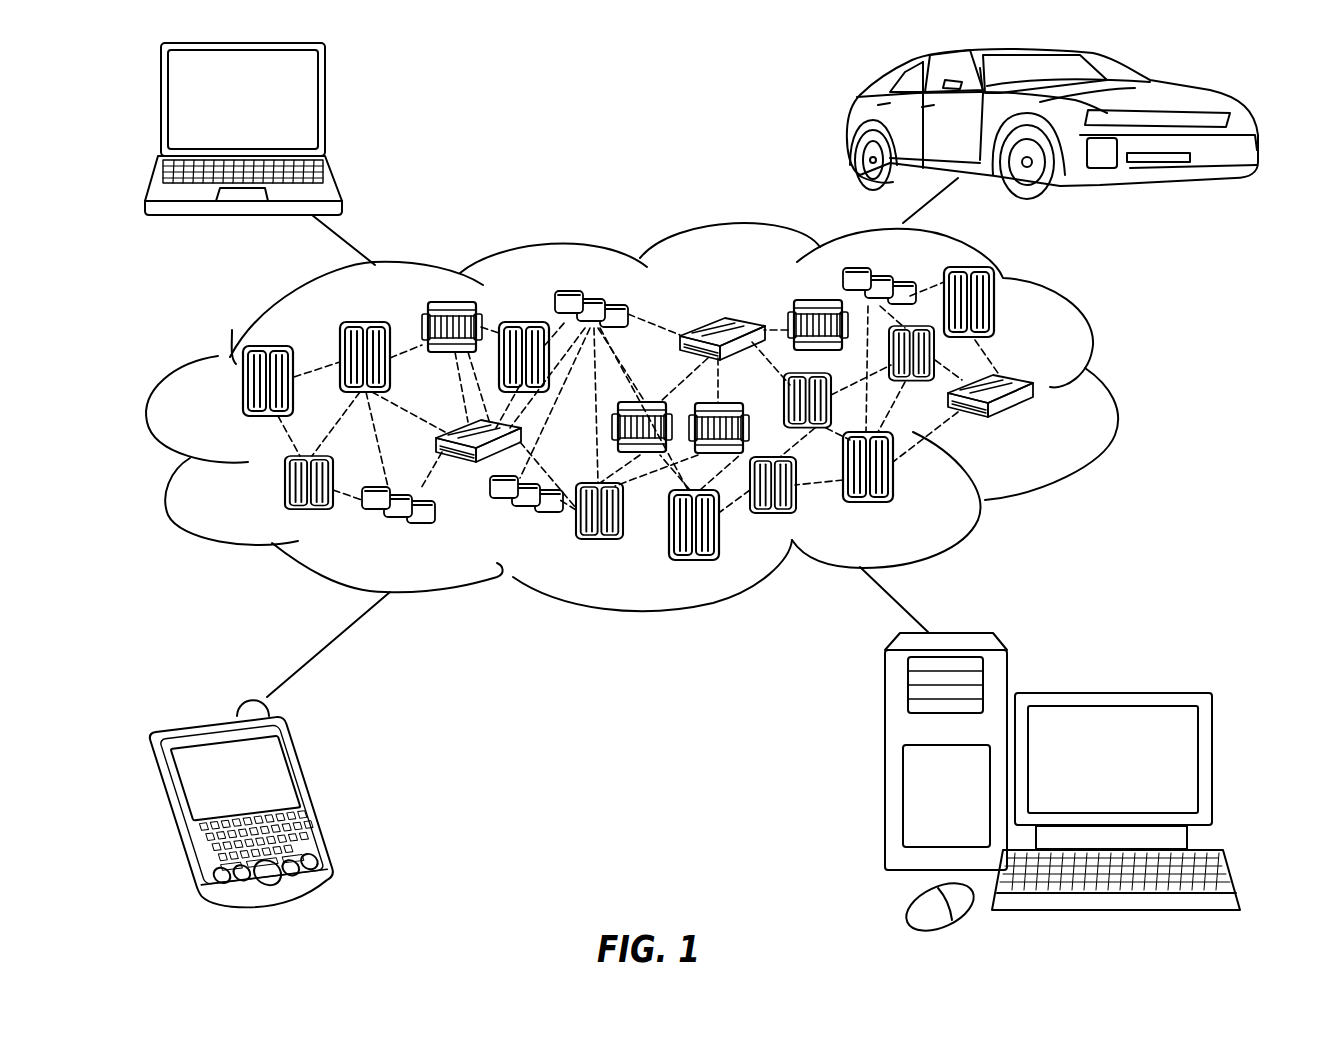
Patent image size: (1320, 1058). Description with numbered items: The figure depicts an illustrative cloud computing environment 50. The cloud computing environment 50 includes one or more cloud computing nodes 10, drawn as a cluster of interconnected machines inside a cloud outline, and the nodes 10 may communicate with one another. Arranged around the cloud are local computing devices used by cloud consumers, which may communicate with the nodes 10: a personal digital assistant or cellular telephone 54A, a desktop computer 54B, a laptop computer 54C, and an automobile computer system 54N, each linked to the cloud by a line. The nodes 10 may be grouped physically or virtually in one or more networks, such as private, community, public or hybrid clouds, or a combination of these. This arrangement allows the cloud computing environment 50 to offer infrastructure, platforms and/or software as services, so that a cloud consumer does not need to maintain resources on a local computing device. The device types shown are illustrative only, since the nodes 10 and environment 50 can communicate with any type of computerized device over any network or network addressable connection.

The cloud computing node 10 is at (1058, 423).
The cloud computing environment 50 is at (1110, 394).
The personal digital assistant (PDA) or cellular telephone 54A is at (314, 791).
The desktop computer 54B is at (1110, 693).
The laptop computer 54C is at (327, 108).
The automobile computer system 54N is at (850, 127).